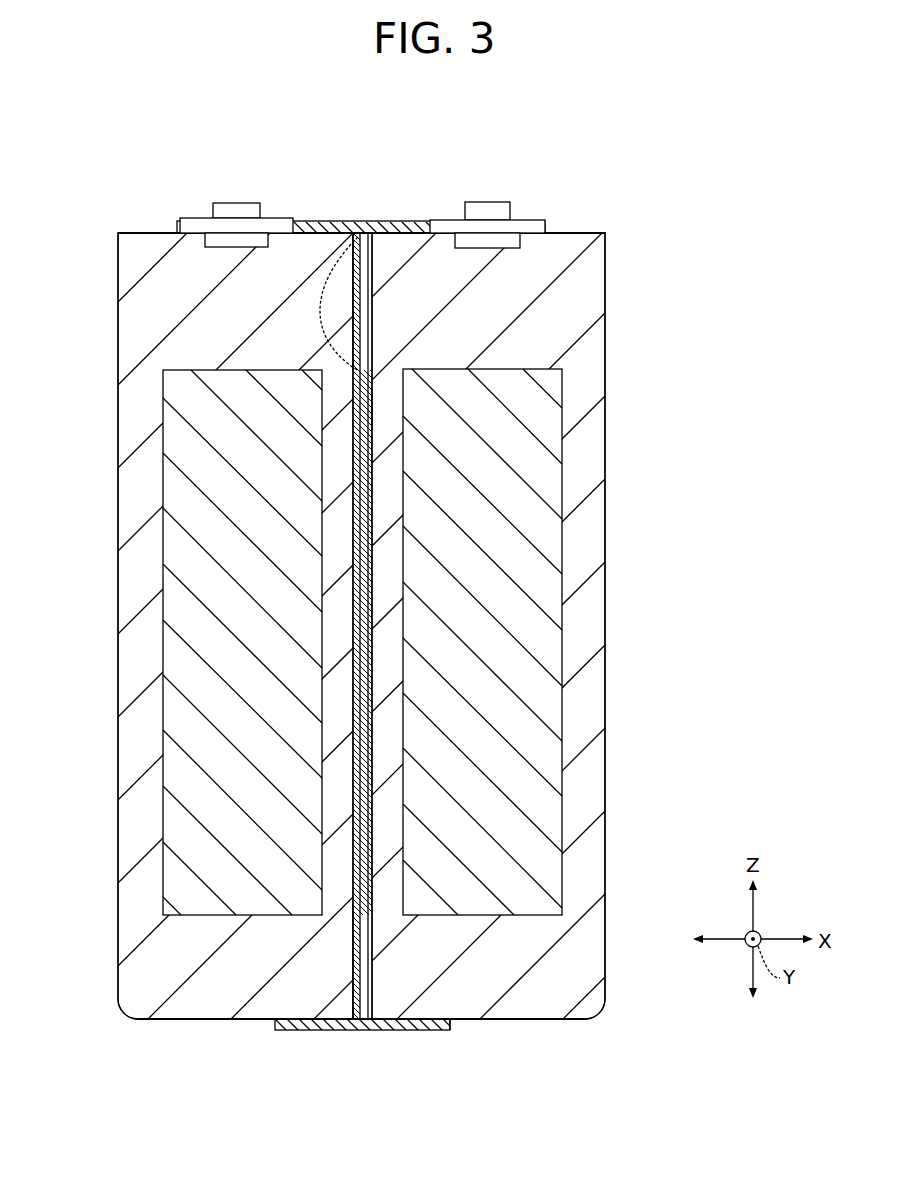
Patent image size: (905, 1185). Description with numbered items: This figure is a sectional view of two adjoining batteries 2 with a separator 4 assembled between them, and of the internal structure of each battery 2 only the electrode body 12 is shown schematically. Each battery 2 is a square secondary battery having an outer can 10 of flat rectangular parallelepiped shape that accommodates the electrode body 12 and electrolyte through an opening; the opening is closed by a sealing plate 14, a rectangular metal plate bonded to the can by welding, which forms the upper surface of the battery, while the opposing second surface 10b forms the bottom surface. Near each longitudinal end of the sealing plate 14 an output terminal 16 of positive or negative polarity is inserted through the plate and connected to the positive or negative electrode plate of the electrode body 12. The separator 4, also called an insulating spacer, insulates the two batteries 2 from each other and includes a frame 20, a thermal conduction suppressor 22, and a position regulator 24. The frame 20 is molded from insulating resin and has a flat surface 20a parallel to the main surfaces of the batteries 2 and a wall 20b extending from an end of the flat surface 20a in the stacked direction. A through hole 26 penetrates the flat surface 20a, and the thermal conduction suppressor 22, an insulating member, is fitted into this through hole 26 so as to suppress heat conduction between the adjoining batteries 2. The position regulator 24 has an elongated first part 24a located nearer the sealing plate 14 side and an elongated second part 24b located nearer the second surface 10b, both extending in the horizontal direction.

The battery 2 is at (195, 1052).
The separator 4 is at (363, 1047).
The outer can 10 is at (118, 968).
The second surface 10b is at (148, 1021).
The electrode body 12 is at (163, 858).
The sealing plate 14 is at (140, 232).
The output terminal 16 is at (233, 202).
The frame 20 is at (290, 1034).
The flat surface 20a is at (373, 972).
The wall 20b is at (432, 1033).
The thermal conduction suppressor 22 is at (373, 868).
The position regulator 24 is at (378, 922).
The first part 24a is at (338, 228).
The second part 24b is at (348, 902).
The through hole 26 is at (375, 418).